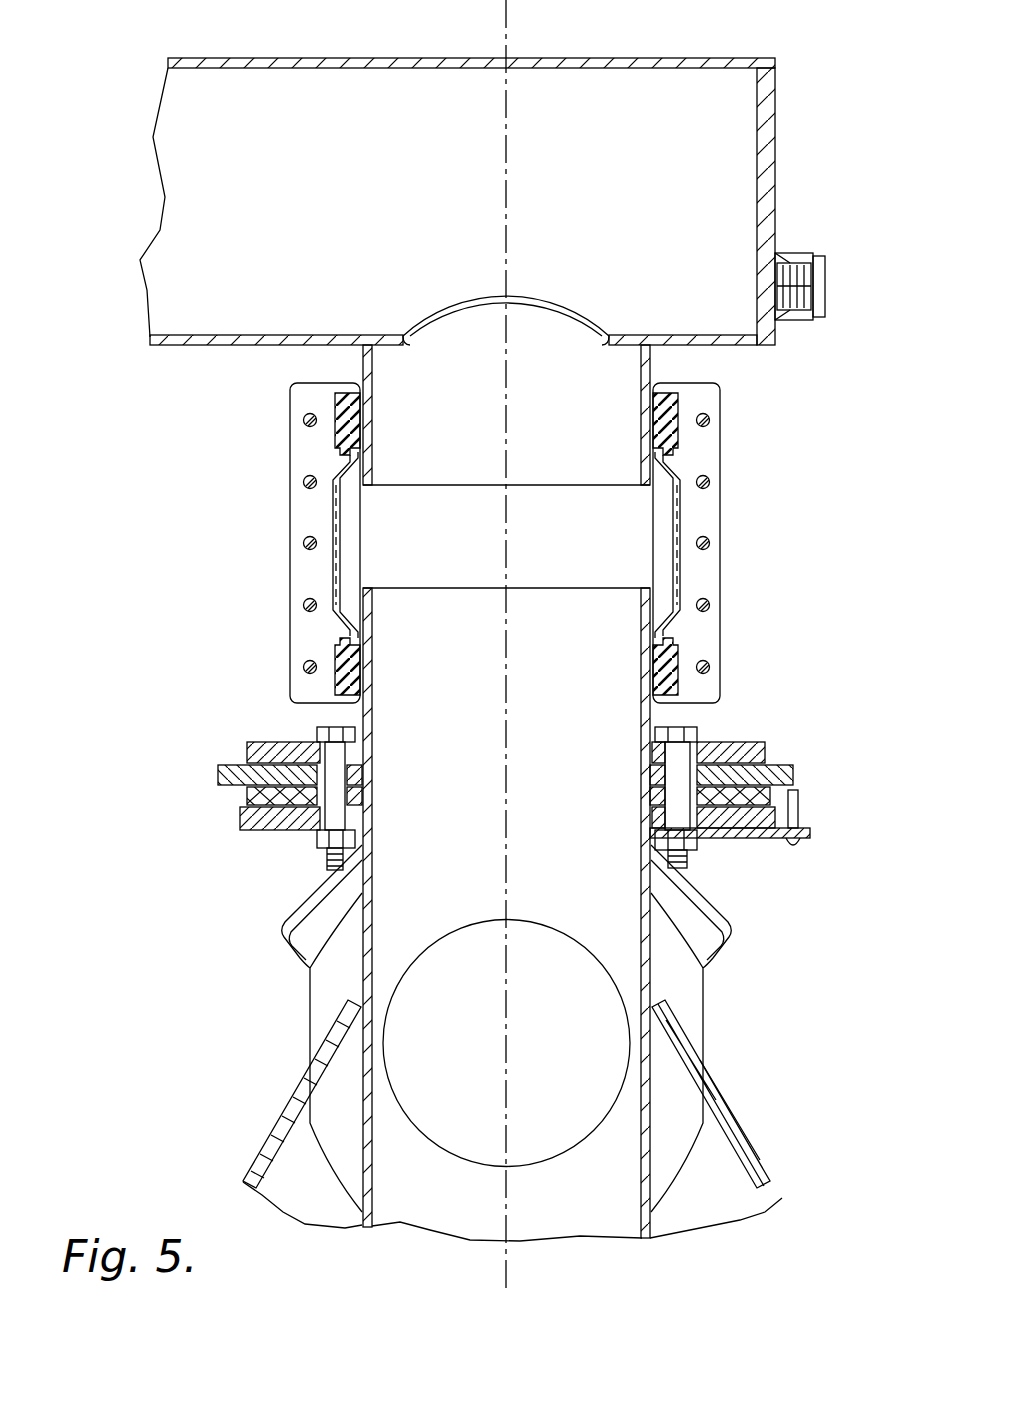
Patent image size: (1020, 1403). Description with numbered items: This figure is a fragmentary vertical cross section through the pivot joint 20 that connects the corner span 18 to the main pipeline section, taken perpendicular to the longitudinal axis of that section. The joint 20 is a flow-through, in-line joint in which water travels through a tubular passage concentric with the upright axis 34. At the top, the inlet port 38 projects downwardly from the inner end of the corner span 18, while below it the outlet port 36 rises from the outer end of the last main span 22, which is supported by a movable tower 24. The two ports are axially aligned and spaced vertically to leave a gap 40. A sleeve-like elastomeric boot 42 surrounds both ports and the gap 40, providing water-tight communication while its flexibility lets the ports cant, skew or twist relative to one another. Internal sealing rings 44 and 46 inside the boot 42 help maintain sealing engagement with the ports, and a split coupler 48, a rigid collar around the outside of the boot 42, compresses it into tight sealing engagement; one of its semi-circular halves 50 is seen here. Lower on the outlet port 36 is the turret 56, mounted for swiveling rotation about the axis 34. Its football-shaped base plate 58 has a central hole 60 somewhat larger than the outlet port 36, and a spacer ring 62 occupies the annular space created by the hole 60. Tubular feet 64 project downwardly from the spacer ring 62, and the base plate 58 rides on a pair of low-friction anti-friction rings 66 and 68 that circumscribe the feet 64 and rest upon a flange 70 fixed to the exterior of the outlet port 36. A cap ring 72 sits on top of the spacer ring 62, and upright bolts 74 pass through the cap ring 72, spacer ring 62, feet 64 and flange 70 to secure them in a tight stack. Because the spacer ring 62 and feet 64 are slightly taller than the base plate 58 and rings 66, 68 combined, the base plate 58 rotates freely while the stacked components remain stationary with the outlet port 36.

The corner span 18 is at (318, 53).
The upright axis 34 is at (506, 27).
The pivot joint 20 is at (579, 543).
The elastomeric boot 42 is at (672, 407).
The internal sealing ring 44 is at (338, 455).
The inlet port 38 is at (370, 485).
The gap 40 is at (610, 525).
The semi-circular half 50 is at (712, 583).
The outlet port 36 is at (373, 600).
The internal sealing ring 46 is at (345, 655).
The split coupler 48 is at (722, 650).
The hole 60 is at (690, 750).
The cap ring 72 is at (258, 748).
The upright bolt 74 is at (333, 808).
The base plate 58 is at (793, 752).
The turret 56 is at (740, 801).
The tubular feet 64 is at (355, 797).
The spacer ring 62 is at (655, 785).
The anti-friction ring 66 is at (760, 797).
The flange 70 is at (245, 825).
The anti-friction ring 68 is at (748, 808).
The movable tower 24 is at (740, 1135).
The main span 22 is at (580, 1130).